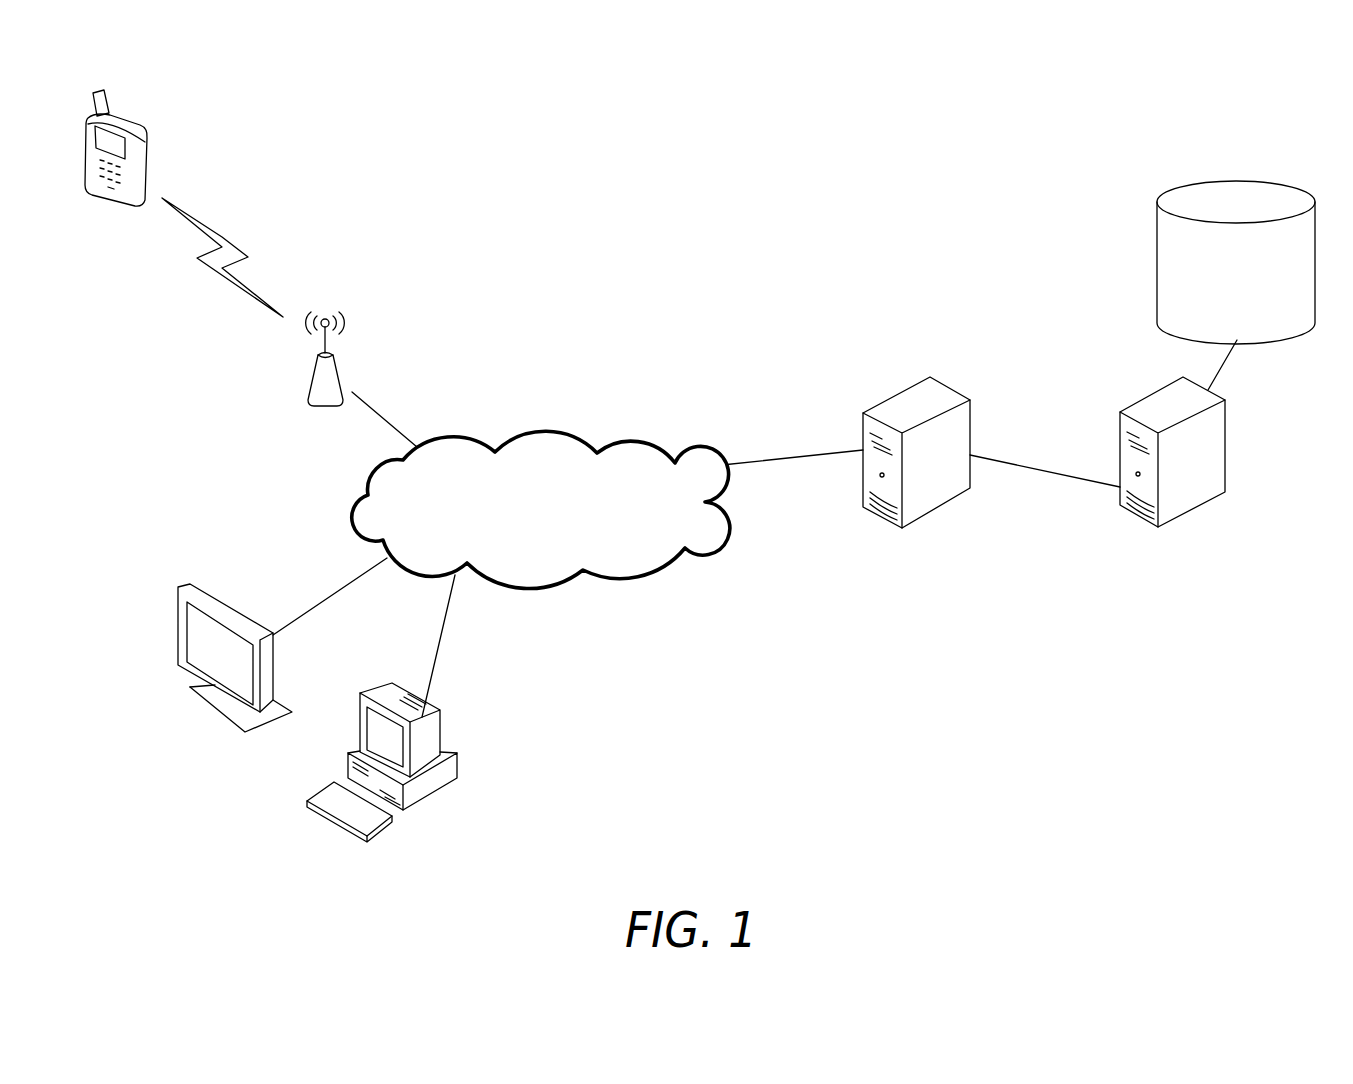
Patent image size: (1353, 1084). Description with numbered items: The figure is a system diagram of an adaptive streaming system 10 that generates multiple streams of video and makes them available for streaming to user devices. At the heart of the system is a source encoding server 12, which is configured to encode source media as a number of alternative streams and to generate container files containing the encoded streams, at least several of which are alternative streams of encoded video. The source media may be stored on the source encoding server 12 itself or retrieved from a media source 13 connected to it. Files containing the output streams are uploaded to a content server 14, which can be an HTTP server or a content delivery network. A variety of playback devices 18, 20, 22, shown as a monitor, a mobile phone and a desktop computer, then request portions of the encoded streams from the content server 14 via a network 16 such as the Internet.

The adaptive streaming system 10 is at (705, 244).
The source encoding server 12 is at (1225, 450).
The media source 13 is at (1158, 260).
The content server 14 is at (947, 383).
The network 16 is at (580, 577).
The playback device 18 is at (202, 703).
The playback device 20 is at (133, 120).
The playback device 22 is at (320, 810).